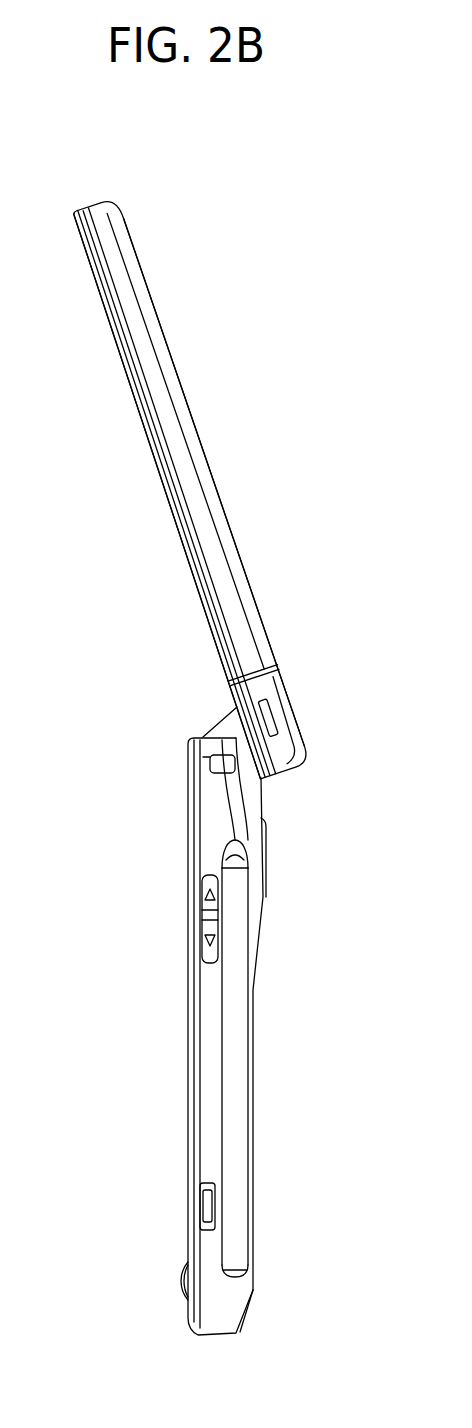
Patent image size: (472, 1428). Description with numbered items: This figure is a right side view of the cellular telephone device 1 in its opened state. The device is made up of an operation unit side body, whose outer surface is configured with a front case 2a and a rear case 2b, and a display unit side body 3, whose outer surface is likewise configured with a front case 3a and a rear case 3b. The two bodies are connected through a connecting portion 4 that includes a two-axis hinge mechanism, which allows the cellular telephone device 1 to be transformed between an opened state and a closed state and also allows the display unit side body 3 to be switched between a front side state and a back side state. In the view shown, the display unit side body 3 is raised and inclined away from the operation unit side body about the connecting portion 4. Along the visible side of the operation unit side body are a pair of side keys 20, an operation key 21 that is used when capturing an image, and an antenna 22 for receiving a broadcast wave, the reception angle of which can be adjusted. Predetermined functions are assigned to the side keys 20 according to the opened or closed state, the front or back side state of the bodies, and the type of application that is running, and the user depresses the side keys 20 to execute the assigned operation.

The cellular telephone device 1 is at (150, 205).
The front case 2a is at (188, 828).
The rear case 2b is at (262, 802).
The display unit side body 3 is at (152, 514).
The front case 3a is at (110, 328).
The rear case 3b is at (142, 272).
The connecting portion 4 is at (212, 686).
The side keys 20 is at (183, 870).
The operation key 21 is at (205, 1210).
The antenna 22 is at (233, 1078).